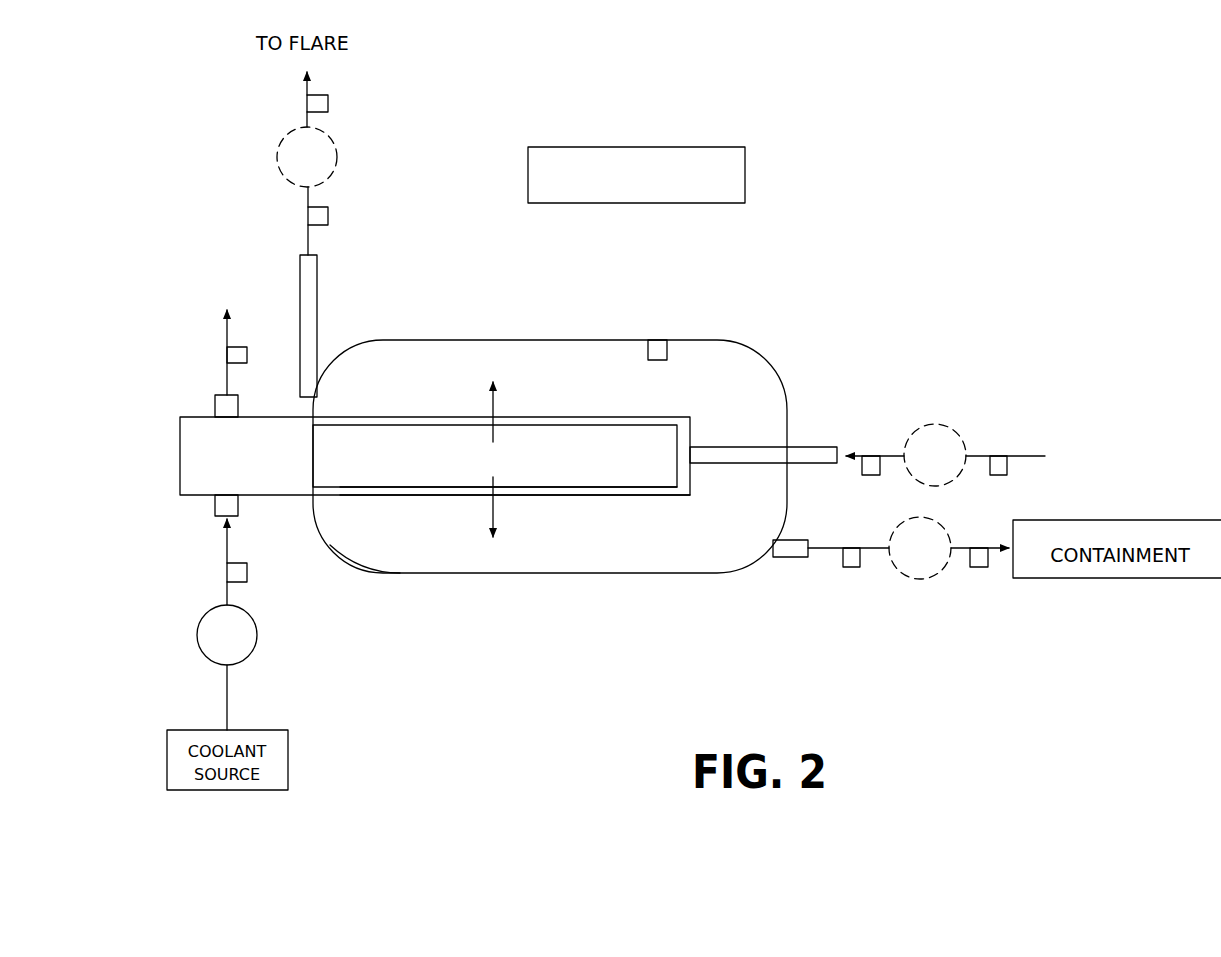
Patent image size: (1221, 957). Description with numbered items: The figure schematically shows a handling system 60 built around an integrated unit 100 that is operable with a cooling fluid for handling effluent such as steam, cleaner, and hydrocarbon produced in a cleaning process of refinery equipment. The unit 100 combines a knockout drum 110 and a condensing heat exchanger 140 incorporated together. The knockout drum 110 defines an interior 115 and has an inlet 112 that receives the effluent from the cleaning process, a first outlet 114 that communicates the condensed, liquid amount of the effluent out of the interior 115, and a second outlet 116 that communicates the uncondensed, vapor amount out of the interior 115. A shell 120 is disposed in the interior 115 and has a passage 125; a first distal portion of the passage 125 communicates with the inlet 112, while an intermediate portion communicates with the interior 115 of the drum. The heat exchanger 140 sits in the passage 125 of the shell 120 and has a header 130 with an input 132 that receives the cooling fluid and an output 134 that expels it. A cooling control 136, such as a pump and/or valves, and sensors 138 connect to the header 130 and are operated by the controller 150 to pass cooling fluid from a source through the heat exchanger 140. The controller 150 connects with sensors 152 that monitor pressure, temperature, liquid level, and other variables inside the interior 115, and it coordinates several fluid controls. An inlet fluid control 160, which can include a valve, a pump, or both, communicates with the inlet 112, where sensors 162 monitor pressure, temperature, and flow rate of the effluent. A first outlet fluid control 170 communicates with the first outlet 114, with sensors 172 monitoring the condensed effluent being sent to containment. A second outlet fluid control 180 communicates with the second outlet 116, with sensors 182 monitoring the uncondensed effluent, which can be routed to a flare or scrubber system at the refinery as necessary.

The handling system 60 is at (993, 220).
The integrated unit 100 is at (570, 325).
The knockout drum 110 is at (411, 340).
The inlet 112 is at (810, 447).
The first outlet 114 is at (785, 557).
The interior 115 is at (415, 573).
The second outlet 116 is at (300, 276).
The shell 120 is at (563, 495).
The passage 125 is at (630, 487).
The header 130 is at (180, 450).
The input 132 is at (215, 510).
The output 134 is at (215, 405).
The cooling control 136 is at (199, 645).
The sensors 138 is at (227, 572).
The condensing heat exchanger 140 is at (416, 425).
The controller 150 is at (745, 185).
The sensors 152 is at (656, 340).
The inlet fluid control 160 is at (935, 424).
The sensors 162 is at (995, 456).
The first outlet fluid control 170 is at (920, 579).
The sensors 172 is at (975, 567).
The second outlet fluid control 180 is at (277, 160).
The sensors 182 is at (328, 104).